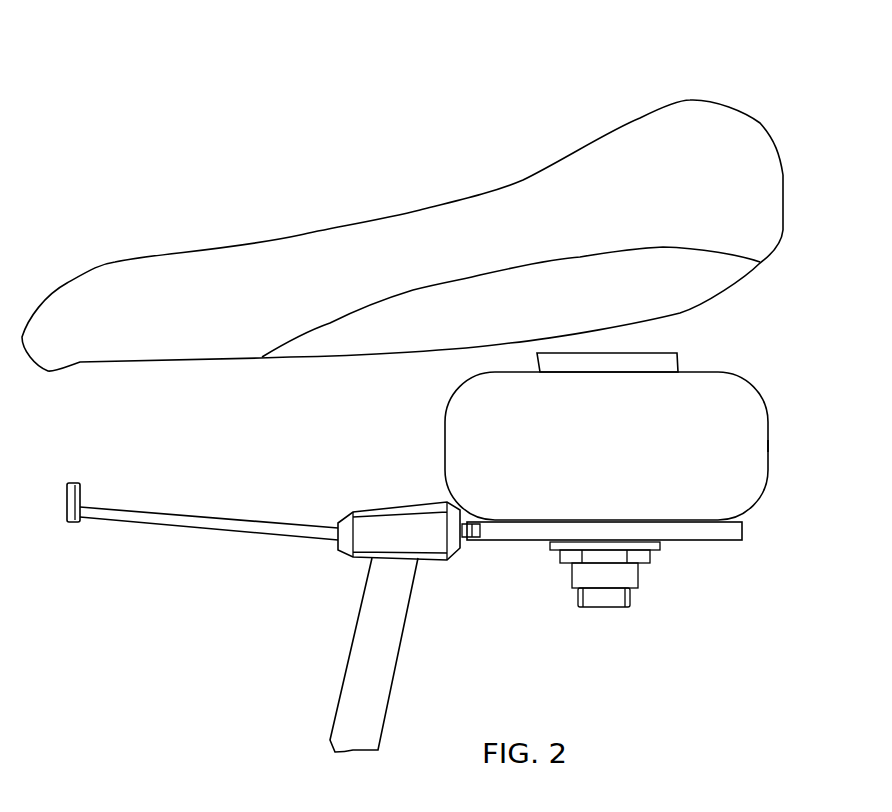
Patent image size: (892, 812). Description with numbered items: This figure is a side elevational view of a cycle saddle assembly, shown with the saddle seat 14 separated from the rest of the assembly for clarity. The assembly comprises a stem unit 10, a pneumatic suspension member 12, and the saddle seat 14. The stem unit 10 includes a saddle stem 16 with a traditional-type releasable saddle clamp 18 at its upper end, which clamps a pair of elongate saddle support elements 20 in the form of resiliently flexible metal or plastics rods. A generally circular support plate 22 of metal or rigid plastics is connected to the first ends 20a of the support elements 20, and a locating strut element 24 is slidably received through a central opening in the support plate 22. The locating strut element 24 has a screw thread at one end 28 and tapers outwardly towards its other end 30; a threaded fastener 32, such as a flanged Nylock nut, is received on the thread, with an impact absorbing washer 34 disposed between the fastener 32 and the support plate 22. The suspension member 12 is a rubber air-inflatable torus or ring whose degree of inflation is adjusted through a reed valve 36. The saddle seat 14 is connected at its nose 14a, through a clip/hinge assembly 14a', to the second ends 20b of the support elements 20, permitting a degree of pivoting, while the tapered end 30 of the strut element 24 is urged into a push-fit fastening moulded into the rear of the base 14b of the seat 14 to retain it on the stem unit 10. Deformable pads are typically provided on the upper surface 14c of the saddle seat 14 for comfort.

The stem unit 10 is at (320, 665).
The pneumatic suspension member 12 is at (745, 466).
The saddle seat 14 is at (463, 220).
The nose 14a is at (93, 227).
The clip/hinge assembly 14a' is at (61, 467).
The base 14b is at (715, 280).
The upper surface 14c is at (702, 100).
The saddle stem 16 is at (372, 692).
The saddle clamp 18 is at (400, 505).
The elongate saddle support elements 20 is at (257, 525).
The first ends 20a is at (477, 532).
The second ends 20b is at (87, 520).
The support plate 22 is at (718, 530).
The locating strut element 24 is at (662, 363).
The threaded end 28 is at (610, 597).
The tapered end 30 is at (647, 352).
The threaded fastener 32 is at (630, 575).
The impact absorbing washer 34 is at (657, 545).
The reed valve 36 is at (768, 446).